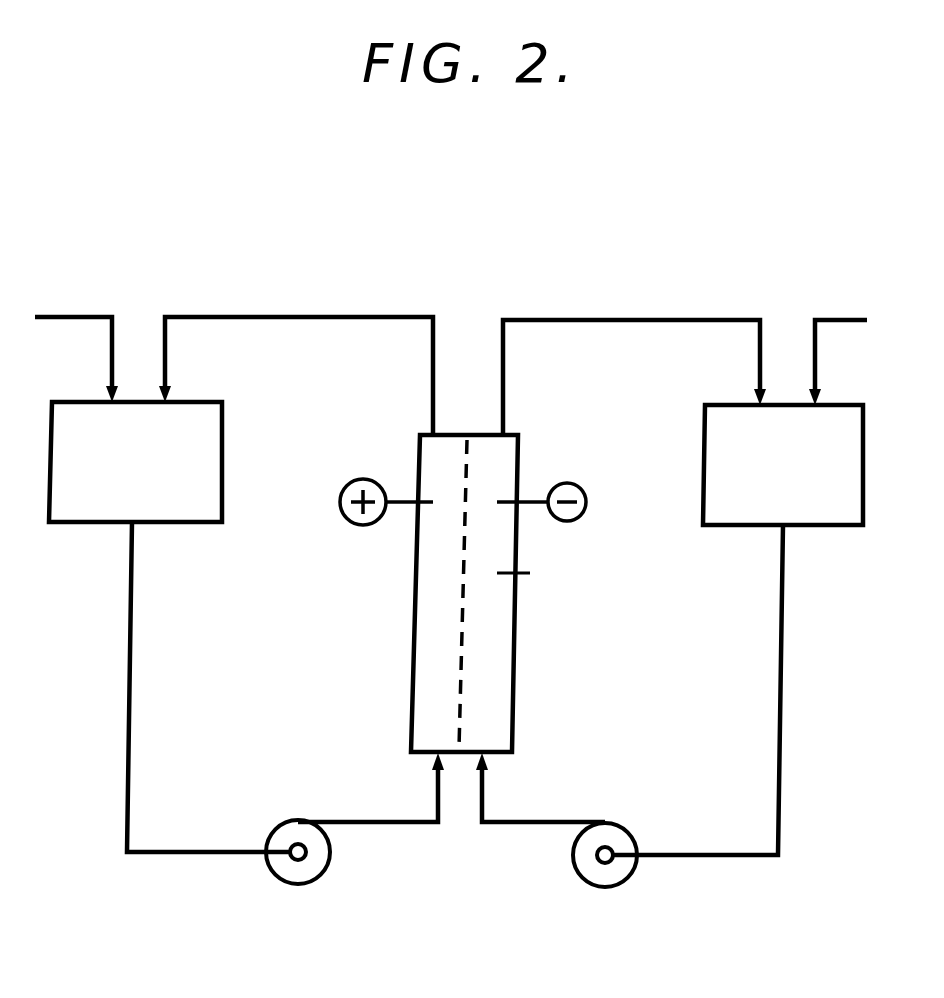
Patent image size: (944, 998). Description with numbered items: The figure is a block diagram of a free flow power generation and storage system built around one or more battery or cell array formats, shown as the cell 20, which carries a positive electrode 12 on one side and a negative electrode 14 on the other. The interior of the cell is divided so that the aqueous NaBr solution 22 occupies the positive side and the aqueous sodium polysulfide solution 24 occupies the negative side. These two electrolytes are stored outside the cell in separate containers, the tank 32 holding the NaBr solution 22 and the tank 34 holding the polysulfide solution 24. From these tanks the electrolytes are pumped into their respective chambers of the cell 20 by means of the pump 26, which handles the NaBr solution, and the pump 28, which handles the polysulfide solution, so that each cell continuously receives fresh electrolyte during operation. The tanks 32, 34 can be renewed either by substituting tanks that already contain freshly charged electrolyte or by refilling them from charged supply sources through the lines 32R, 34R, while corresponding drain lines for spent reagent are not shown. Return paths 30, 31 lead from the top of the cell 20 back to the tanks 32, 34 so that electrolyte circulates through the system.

The positive electrode 12 is at (402, 498).
The negative electrode 14 is at (530, 498).
The cell 20 is at (520, 655).
The aqueous NaBr solution 22 is at (418, 617).
The aqueous Na2Sx solution 24 is at (536, 573).
The pump 26 is at (280, 828).
The pump 28 is at (620, 836).
The container 32 is at (136, 480).
The line 32R is at (64, 316).
The container 34 is at (792, 485).
The line 34R is at (860, 297).
The return line from cell to reservoir 32 30 is at (296, 376).
The return line from cell to reservoir 34 31 is at (634, 377).